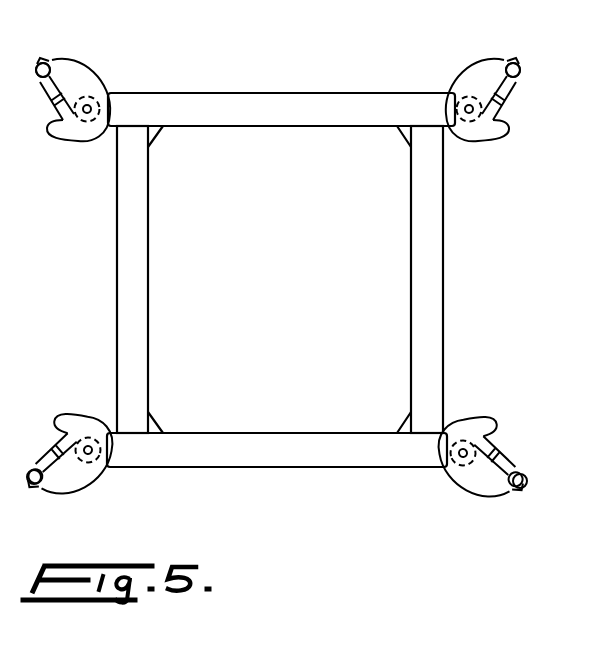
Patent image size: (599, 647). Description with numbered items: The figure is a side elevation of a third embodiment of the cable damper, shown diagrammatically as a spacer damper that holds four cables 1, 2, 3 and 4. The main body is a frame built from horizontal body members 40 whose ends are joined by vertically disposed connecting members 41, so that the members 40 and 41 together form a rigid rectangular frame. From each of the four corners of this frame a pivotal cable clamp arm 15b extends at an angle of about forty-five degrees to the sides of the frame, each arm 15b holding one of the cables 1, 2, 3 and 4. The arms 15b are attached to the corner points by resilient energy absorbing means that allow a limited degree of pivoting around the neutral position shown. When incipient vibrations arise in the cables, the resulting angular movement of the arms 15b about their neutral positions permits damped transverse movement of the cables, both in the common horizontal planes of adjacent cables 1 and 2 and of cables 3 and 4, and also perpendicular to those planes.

The cable 1 is at (46, 64).
The cable 2 is at (516, 63).
The cable 3 is at (518, 492).
The cable 4 is at (38, 488).
The pivotal cable clamp arm 15b is at (76, 77).
The horizontal body member 40 is at (318, 114).
The vertically disposed connecting member 41 is at (139, 289).